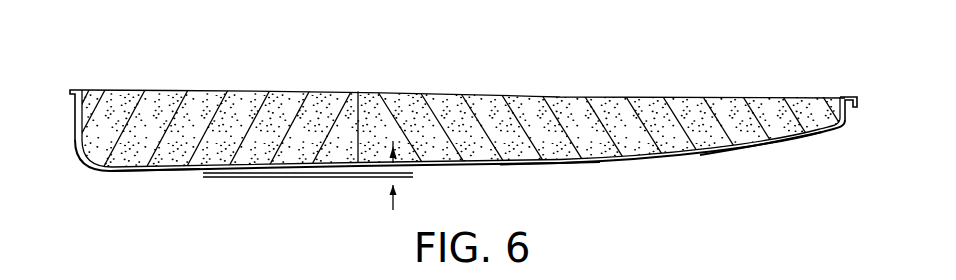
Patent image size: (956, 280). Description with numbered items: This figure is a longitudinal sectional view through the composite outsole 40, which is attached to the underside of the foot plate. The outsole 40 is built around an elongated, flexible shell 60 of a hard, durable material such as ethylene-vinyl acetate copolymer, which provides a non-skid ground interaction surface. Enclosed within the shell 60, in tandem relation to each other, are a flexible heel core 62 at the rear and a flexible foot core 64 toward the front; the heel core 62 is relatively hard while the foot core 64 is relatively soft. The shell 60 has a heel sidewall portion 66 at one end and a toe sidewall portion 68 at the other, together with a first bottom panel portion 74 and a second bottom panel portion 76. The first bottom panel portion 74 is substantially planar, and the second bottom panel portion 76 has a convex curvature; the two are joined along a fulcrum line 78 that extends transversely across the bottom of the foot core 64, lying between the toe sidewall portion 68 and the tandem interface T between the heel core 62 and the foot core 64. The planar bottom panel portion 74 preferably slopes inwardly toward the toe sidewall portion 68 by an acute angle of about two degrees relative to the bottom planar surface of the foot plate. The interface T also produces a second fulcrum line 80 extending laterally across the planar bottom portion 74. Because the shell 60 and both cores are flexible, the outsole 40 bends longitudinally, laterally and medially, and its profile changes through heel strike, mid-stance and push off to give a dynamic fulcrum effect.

The composite outsole 40 is at (461, 129).
The flexible shell 60 is at (488, 174).
The flexible heel core 62 is at (163, 100).
The flexible foot core 64 is at (577, 110).
The heel sidewall portion 66 is at (78, 138).
The toe sidewall portion 68 is at (852, 108).
The first bottom panel portion 74 is at (152, 173).
The second bottom panel portion 76 is at (724, 153).
The fulcrum line 78 is at (578, 172).
The fulcrum line 80 is at (352, 176).
The tandem interface T is at (359, 112).